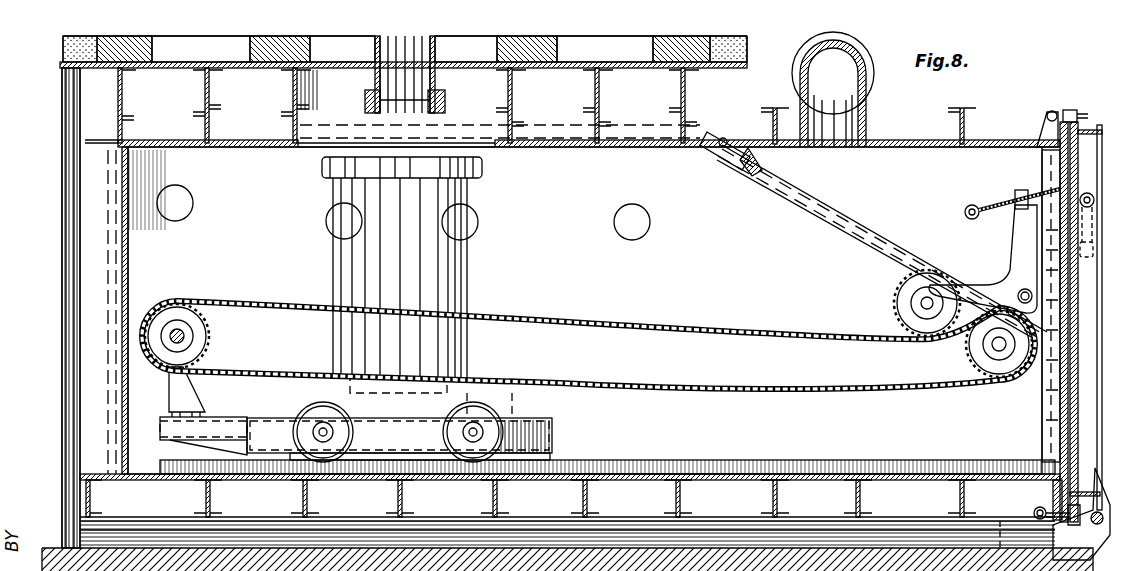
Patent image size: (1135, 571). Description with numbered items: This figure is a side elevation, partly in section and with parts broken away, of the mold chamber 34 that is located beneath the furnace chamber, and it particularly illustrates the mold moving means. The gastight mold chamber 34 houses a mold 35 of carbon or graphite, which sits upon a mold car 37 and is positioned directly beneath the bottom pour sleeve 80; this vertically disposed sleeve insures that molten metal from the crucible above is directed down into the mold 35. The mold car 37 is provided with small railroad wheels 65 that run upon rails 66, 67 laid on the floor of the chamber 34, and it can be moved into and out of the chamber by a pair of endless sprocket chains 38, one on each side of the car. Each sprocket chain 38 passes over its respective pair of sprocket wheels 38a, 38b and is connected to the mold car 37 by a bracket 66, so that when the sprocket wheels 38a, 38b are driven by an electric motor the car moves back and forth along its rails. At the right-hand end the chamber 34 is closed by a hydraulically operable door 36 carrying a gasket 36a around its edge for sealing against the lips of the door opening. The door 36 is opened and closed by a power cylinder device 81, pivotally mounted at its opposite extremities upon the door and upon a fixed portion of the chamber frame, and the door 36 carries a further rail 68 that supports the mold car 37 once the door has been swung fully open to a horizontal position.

The mold chamber 34 is at (62, 240).
The mold 35 is at (468, 272).
The door 36 is at (1072, 278).
The gasket 36a is at (1050, 130).
The mold car 37 is at (552, 434).
The sprocket chains 38 is at (665, 324).
The sprocket wheel 38a is at (212, 336).
The sprocket wheel 38b is at (966, 352).
The railroad wheels 65 is at (345, 416).
The bracket 66 is at (185, 401).
The rail 67 is at (812, 444).
The rail 68 is at (1042, 405).
The bottom pour sleeve 80 is at (440, 80).
The power cylinder device 81 is at (848, 200).